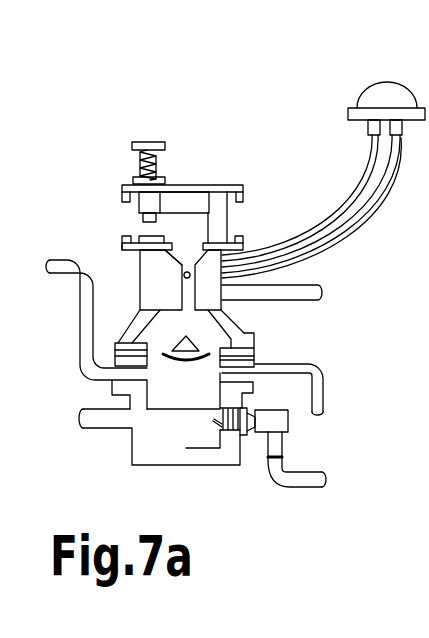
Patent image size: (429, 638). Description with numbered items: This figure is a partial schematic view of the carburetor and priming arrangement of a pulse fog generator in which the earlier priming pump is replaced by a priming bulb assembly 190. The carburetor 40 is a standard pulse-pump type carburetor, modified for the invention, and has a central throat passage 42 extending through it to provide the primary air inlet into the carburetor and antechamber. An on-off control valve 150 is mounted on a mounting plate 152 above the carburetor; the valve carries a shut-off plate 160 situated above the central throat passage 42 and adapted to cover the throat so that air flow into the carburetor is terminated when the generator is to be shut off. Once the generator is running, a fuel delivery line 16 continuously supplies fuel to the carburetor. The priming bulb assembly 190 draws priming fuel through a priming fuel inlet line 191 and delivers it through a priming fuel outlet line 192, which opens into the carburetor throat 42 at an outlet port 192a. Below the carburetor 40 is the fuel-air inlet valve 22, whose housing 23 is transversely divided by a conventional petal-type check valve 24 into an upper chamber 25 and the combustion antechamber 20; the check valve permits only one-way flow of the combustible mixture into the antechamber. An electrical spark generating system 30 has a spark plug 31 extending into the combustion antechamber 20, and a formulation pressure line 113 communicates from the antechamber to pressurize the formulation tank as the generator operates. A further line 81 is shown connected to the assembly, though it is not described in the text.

The on-off control valve 150 is at (134, 177).
The mounting plate 152 is at (195, 183).
The shut-off plate 160 is at (193, 218).
The outlet port 192a is at (183, 274).
The carburetor 40 is at (140, 278).
The central throat passage 42 is at (187, 293).
The priming fuel inlet line 191 is at (338, 213).
The priming fuel outlet line 192 is at (358, 224).
The priming bulb assembly 190 is at (426, 104).
The fuel delivery line 16 is at (310, 287).
The housing 23 is at (228, 326).
The fuel-air inlet valve 22 is at (250, 335).
The petal-type check valve 24 is at (182, 337).
The upper chamber 25 is at (158, 348).
The tube 81 is at (81, 340).
The combustion antechamber 20 is at (195, 442).
The formulation pressure line 113 is at (324, 392).
The spark plug 31 is at (247, 438).
The electrical spark generating system 30 is at (287, 475).